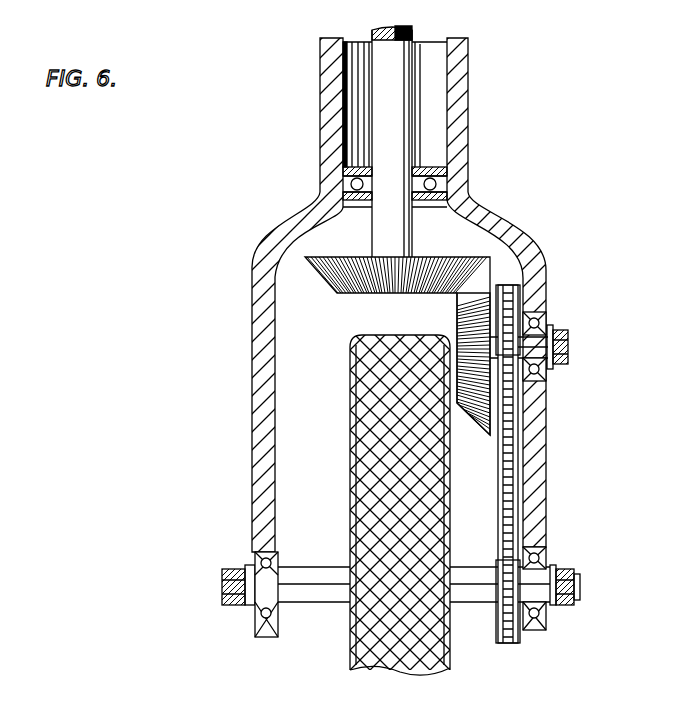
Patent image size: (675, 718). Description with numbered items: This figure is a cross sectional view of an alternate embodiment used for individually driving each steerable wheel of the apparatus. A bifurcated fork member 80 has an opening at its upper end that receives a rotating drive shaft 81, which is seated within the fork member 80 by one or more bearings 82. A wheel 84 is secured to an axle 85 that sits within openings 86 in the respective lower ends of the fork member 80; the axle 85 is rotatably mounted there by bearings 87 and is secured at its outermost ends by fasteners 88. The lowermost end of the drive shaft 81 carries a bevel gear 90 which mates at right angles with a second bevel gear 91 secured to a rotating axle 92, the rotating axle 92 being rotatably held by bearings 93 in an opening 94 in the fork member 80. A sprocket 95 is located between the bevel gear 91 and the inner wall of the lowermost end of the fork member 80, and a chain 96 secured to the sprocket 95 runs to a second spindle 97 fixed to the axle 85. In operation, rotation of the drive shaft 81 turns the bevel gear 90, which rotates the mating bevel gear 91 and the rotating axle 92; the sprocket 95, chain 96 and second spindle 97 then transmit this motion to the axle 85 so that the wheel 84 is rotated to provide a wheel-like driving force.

The bifurcated fork member 80 is at (469, 86).
The rotating drive shaft 81 is at (398, 52).
The bearings 82 is at (455, 194).
The wheel 84 is at (456, 654).
The axle 85 is at (304, 600).
The openings 86 is at (545, 557).
The bearings 87 is at (545, 614).
The fasteners 88 is at (576, 604).
The bevel gear 90 is at (455, 238).
The bevel gear 91 is at (479, 430).
The rotating axle 92 is at (566, 346).
The bearings 93 is at (536, 318).
The opening 94 is at (538, 372).
The sprocket 95 is at (517, 297).
The chain 96 is at (520, 520).
The second spindle 97 is at (522, 643).